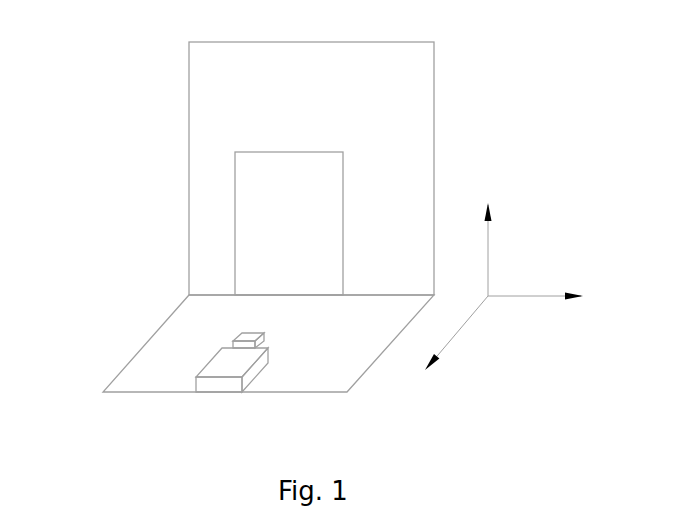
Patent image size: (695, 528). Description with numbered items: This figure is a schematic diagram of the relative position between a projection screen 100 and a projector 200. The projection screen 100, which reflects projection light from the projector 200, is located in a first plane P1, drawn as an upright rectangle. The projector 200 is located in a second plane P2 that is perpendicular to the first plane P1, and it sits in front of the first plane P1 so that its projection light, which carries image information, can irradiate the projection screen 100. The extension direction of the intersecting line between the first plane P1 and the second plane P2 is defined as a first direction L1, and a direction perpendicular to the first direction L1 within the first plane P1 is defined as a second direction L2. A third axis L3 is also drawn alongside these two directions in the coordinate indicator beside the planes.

The first plane P1 is at (405, 92).
The second plane P2 is at (181, 331).
The projection screen 100 is at (270, 201).
The projector 200 is at (222, 370).
The first direction L1 is at (553, 300).
The second direction L2 is at (494, 233).
The third direction L3 is at (447, 349).